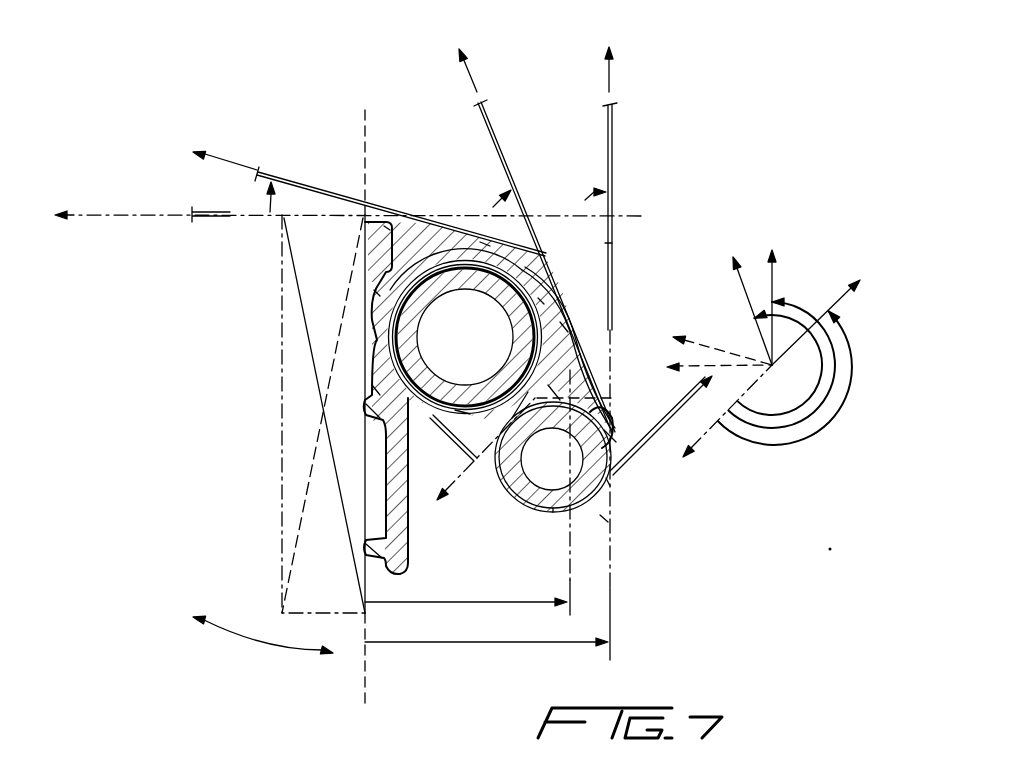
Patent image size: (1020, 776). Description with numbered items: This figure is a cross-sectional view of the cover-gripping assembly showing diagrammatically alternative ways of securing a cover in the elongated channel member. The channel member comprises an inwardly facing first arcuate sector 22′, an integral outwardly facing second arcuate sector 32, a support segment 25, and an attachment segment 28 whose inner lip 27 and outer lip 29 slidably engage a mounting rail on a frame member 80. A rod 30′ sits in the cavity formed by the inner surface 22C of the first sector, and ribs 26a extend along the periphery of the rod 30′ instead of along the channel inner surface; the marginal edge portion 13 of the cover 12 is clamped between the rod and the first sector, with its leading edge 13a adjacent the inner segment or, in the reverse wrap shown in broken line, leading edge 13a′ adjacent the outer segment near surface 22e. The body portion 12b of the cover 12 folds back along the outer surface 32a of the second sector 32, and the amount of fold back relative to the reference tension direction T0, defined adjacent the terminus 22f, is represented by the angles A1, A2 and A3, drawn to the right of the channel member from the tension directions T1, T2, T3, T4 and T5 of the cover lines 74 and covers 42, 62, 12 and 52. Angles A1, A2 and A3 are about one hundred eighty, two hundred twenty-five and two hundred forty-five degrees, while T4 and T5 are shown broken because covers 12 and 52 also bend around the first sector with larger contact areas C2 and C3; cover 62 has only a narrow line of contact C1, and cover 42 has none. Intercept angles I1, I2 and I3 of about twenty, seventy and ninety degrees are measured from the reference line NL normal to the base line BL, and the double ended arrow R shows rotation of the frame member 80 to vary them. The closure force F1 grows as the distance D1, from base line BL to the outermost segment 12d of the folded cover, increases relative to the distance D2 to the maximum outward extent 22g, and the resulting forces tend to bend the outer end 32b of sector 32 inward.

The cover 12 is at (346, 197).
The body portion of the cover 12b is at (575, 520).
The outermost segment of the folded back cover portion 12d is at (606, 480).
The marginal edge portion 13 is at (378, 282).
The leading edge 13a is at (432, 424).
The leading edge (reverse wrap) 13a′ is at (457, 412).
The first arcuate sector 22′ is at (375, 312).
The inner surface of first arcuate sector 22C is at (484, 240).
The inner surface of first arcuate sector 22e is at (378, 392).
The terminus 22f is at (592, 420).
The maximum outward extent of outer surface 22g is at (565, 327).
The support segment 25 is at (380, 250).
The ribs 26a is at (430, 300).
The inner lip 27 is at (370, 412).
The attachment segment 28 is at (410, 530).
The outer lip 29 is at (370, 555).
The rod 30′ is at (421, 372).
The second arcuate sector 32 is at (530, 520).
The outer surface of second sector 32a is at (605, 520).
The outer end of second sector 32b is at (615, 448).
The cover 42 is at (615, 205).
The cover 52 is at (222, 220).
The cover 62 is at (508, 160).
The cover lines 74 is at (612, 470).
The frame member 80 is at (282, 352).
The reference line NL is at (126, 213).
The base line BL is at (365, 678).
The double ended arrow R is at (268, 645).
The reference tension direction T0 is at (447, 495).
The tension direction T1 is at (862, 280).
The tension direction T2 is at (610, 62).
The tension direction T3 is at (476, 74).
The tension direction T4 is at (206, 150).
The tension direction T5 is at (70, 218).
The intercept angle I1 is at (268, 200).
The intercept angle I2 is at (493, 207).
The intercept angle I3 is at (585, 200).
The area of contact C1 is at (540, 300).
The area of contact C2 is at (560, 248).
The closure force F1 is at (548, 430).
The fold back angle A1 is at (828, 425).
The fold back angle A2 is at (834, 395).
The fold back angle A3 is at (822, 368).
The distance D1 is at (480, 642).
The distance D2 is at (488, 602).